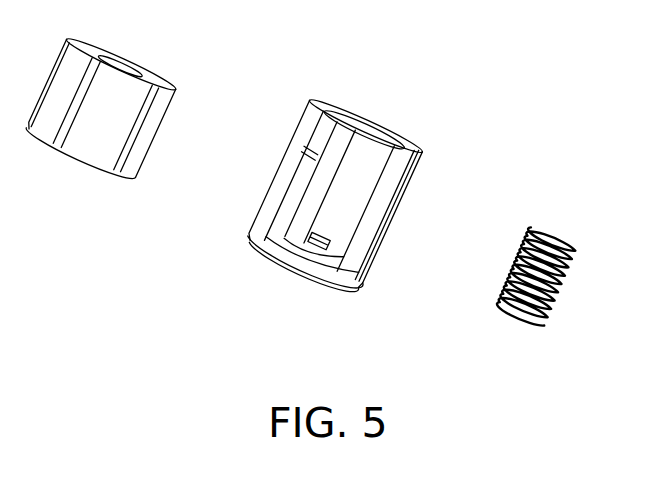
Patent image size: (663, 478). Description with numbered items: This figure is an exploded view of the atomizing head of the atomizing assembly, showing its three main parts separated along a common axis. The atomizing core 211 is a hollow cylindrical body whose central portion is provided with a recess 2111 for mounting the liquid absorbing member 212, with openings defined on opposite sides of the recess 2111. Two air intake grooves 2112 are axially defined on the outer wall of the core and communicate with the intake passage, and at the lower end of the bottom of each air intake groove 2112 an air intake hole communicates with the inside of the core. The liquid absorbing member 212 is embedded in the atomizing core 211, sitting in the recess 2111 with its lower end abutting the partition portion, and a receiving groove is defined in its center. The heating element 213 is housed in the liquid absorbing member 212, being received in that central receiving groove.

The atomizing core 211 is at (361, 170).
The recess 2111 is at (305, 135).
The air intake groove 2112 is at (352, 187).
The liquid absorbing member 212 is at (124, 111).
The heating element 213 is at (560, 277).